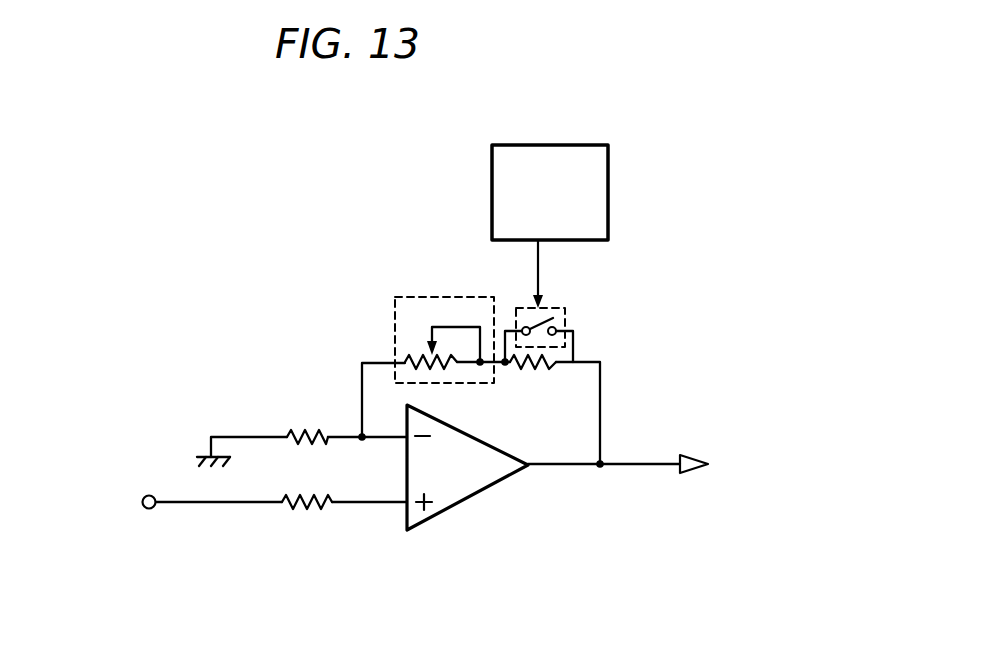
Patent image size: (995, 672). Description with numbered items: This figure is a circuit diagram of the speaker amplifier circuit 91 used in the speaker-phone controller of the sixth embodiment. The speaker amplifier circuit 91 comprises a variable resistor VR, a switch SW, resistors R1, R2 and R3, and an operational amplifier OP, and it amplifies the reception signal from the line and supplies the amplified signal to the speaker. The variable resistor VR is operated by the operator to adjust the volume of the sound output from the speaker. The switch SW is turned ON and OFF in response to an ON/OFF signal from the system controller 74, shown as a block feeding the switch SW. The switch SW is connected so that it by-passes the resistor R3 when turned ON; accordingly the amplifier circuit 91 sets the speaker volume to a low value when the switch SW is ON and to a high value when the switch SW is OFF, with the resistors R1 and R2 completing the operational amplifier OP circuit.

The speaker amplifier circuit 91 is at (660, 362).
The system controller 74 is at (608, 181).
The variable resistor VR is at (420, 297).
The switch SW is at (568, 320).
The resistor R1 is at (307, 428).
The resistor R2 is at (307, 492).
The resistor R3 is at (533, 375).
The operational amplifier OP is at (493, 487).